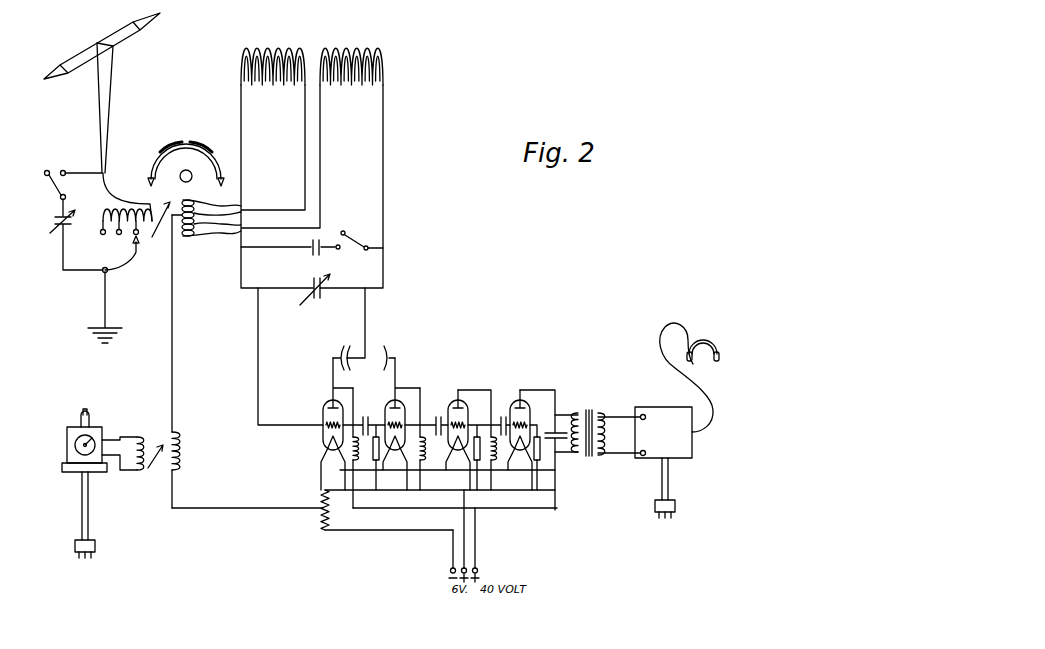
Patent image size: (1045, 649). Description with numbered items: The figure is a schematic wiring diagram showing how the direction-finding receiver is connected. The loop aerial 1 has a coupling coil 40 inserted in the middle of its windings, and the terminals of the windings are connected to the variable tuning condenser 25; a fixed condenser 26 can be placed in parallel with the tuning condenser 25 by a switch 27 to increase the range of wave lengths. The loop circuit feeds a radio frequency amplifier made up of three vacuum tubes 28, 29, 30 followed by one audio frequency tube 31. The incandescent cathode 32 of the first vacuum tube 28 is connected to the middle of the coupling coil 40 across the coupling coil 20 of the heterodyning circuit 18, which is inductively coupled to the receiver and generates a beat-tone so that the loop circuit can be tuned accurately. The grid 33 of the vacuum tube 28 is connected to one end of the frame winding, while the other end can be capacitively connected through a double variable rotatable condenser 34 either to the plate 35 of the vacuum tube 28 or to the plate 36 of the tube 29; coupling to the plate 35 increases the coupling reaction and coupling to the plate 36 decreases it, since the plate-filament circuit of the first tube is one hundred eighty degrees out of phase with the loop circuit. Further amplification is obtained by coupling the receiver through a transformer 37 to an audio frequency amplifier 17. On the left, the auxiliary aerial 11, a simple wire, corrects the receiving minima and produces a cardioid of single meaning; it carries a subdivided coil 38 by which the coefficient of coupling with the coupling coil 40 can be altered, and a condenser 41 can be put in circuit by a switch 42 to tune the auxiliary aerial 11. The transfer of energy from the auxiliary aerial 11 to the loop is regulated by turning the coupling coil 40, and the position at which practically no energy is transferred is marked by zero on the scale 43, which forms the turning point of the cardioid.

The loop aerial 1 is at (312, 160).
The auxiliary aerial 11 is at (102, 93).
The audio frequency amplifier 17 is at (677, 420).
The heterodyning circuit 18 is at (94, 483).
The coupling coil 20 is at (169, 361).
The variable tuning condenser 25 is at (319, 289).
The fixed condenser 26 is at (290, 252).
The switch 27 is at (362, 236).
The vacuum tube 28 is at (324, 424).
The vacuum tube 29 is at (397, 424).
The vacuum tube 30 is at (451, 403).
The audio frequency tube 31 is at (512, 403).
The incandescent cathode 32 is at (329, 452).
The grid 33 is at (328, 423).
The double variable rotatable condenser 34 is at (364, 361).
The plate 35 is at (330, 405).
The plate 36 is at (391, 401).
The transformer 37 is at (597, 441).
The subdivided coil 38 is at (110, 208).
The coupling coil 40 is at (195, 224).
The condenser 41 is at (65, 240).
The switch 42 is at (71, 185).
The scale 43 is at (187, 151).